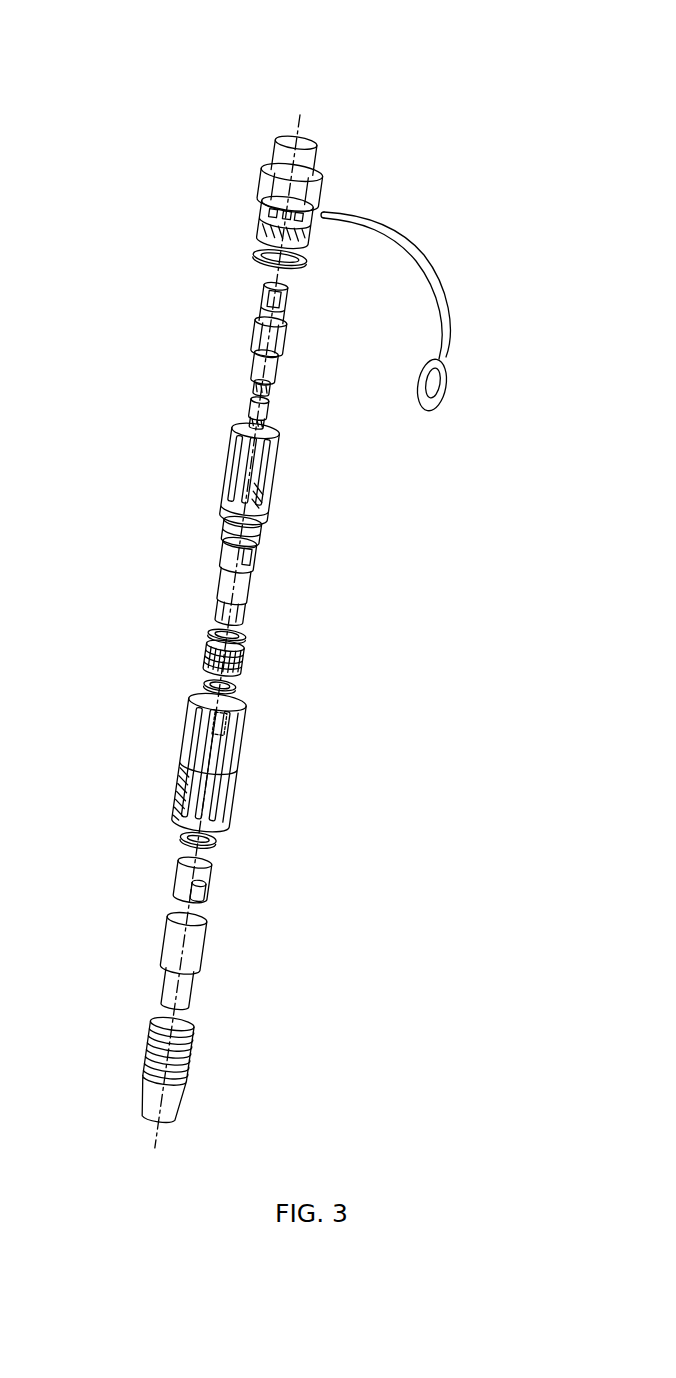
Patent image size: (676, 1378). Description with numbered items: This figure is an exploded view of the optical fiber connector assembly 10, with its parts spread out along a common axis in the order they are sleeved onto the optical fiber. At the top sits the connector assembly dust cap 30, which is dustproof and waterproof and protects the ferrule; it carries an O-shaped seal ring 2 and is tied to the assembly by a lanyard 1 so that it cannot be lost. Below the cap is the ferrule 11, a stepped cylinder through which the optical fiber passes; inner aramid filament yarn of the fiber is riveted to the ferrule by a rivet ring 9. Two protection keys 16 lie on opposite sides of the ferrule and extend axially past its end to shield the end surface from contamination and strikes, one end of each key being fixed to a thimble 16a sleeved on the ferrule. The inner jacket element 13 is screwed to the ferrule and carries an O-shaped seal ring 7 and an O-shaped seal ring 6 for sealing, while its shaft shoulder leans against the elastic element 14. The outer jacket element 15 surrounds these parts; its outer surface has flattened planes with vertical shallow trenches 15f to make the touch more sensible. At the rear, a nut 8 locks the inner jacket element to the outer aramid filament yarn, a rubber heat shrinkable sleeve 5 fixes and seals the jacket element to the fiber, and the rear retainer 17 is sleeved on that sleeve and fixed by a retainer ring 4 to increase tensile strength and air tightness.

The connector assembly dust cap 30 is at (313, 150).
The lanyard 1 is at (443, 303).
The O-shaped seal ring 2 is at (292, 257).
The ferrule 11 is at (285, 350).
The rivet ring 9 is at (270, 412).
The protection key 16 is at (267, 483).
The thimble 16a is at (257, 515).
The inner jacket element 13 is at (253, 563).
The O-shaped seal ring 6 is at (245, 637).
The elastic element 14 is at (243, 660).
The O-shaped seal ring 7 is at (237, 685).
The outer jacket element 15 is at (238, 765).
The vertical shallow trenches 15f is at (178, 795).
The optical fiber connector assembly 10 is at (365, 768).
The retainer ring 4 is at (213, 843).
The nut 8 is at (210, 882).
The rubber heat shrinkable sleeve 5 is at (202, 945).
The rear retainer 17 is at (190, 1050).